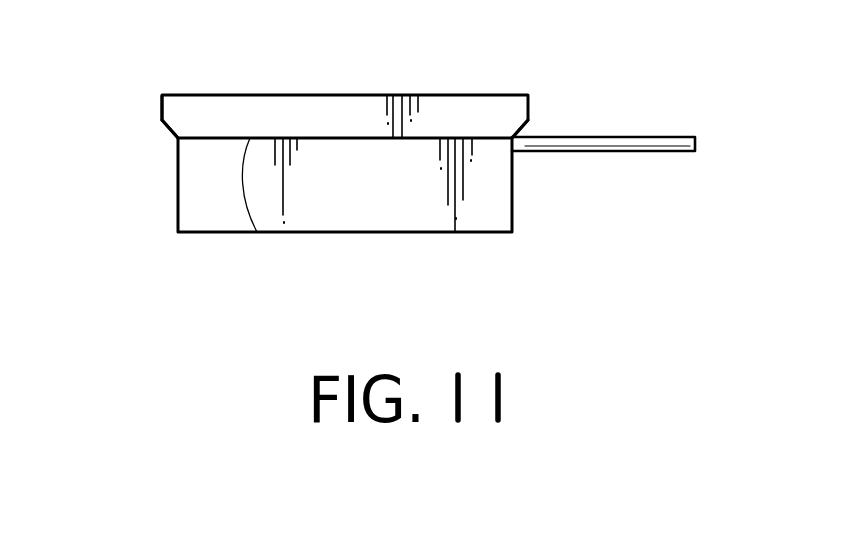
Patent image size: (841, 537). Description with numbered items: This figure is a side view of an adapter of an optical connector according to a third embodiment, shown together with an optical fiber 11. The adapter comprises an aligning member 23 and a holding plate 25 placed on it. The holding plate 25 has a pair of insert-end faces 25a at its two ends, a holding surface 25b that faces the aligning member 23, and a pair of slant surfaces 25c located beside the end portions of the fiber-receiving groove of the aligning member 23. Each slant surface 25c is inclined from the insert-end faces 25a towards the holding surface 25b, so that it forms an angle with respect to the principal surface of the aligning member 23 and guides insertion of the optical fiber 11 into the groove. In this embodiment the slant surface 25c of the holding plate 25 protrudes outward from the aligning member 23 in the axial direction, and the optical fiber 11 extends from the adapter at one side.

The optical fiber 11 is at (610, 132).
The aligning member 23 is at (388, 232).
The holding plate 25 is at (375, 93).
The insert-end faces 25a is at (162, 110).
The holding surface 25b is at (257, 232).
The slant surfaces 25c is at (174, 136).